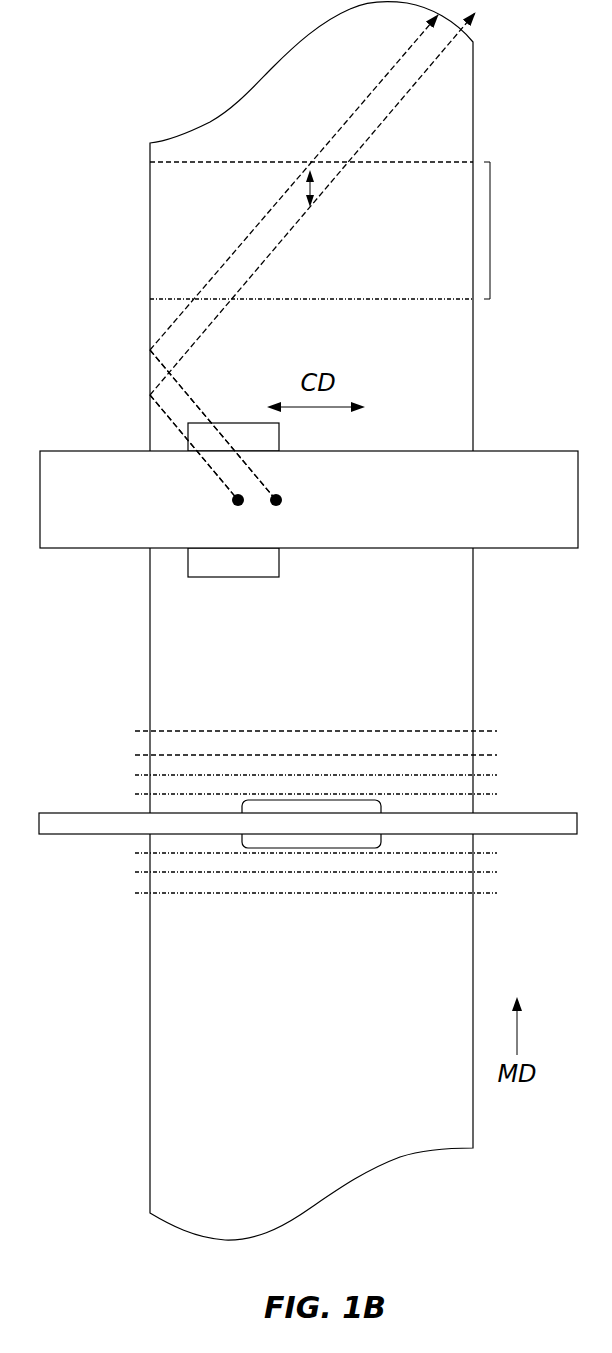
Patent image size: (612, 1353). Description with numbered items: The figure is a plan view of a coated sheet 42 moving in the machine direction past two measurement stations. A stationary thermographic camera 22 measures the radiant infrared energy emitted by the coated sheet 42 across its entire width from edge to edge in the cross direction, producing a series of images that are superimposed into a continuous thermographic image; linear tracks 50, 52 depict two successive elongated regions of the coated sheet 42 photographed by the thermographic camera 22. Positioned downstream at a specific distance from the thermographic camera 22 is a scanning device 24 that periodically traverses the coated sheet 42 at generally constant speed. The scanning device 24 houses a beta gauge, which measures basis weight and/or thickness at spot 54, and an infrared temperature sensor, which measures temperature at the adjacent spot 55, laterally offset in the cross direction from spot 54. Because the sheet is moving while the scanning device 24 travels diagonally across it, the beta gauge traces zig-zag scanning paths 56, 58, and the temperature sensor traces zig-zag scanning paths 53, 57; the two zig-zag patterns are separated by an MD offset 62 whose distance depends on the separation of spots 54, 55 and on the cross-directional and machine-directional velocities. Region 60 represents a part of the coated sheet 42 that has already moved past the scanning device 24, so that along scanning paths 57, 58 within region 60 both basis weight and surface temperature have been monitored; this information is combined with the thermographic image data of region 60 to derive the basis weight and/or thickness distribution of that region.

The thermographic camera 22 is at (270, 848).
The scanning device 24 is at (512, 513).
The coated sheet 42 is at (402, 1100).
The linear track 50 is at (507, 731).
The linear track 52 is at (507, 755).
The scanning path 53 is at (195, 402).
The spot 54 is at (228, 503).
The spot 55 is at (287, 500).
The scanning path 56 is at (180, 432).
The scanning path 57 is at (393, 72).
The scanning path 58 is at (395, 107).
The region 60 is at (504, 230).
The MD offset 62 is at (312, 190).